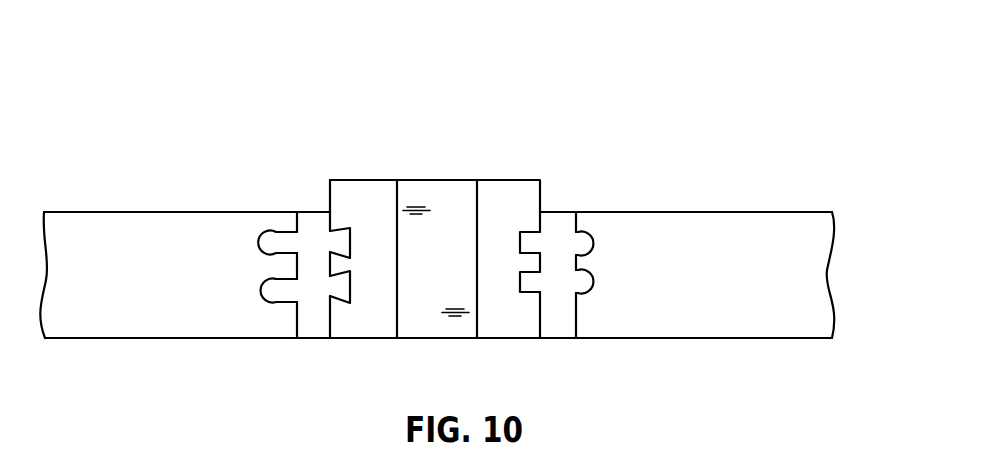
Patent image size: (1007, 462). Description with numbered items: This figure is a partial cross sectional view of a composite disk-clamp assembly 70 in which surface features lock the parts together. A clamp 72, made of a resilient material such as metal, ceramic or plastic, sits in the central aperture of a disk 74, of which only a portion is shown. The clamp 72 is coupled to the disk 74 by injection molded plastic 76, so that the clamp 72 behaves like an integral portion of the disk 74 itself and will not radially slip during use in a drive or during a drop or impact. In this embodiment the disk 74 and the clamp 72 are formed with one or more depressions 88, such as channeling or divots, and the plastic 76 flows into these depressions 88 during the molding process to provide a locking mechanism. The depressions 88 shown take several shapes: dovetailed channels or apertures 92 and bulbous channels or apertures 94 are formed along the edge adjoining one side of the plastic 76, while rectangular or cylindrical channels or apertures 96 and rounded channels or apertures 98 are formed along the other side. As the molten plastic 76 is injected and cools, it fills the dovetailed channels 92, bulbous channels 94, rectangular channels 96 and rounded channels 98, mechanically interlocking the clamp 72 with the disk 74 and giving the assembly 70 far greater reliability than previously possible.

The composite disk-clamp assembly 70 is at (105, 160).
The clamp 72 is at (513, 180).
The disk 74 is at (148, 338).
The injection molded plastic 76 is at (308, 210).
The depressions 88 is at (350, 288).
The dovetailed channels or apertures 92 is at (352, 311).
The bulbous channels or apertures 94 is at (267, 310).
The rectangular or cylindrical channels or apertures 96 is at (522, 298).
The rounded channels or apertures 98 is at (591, 299).